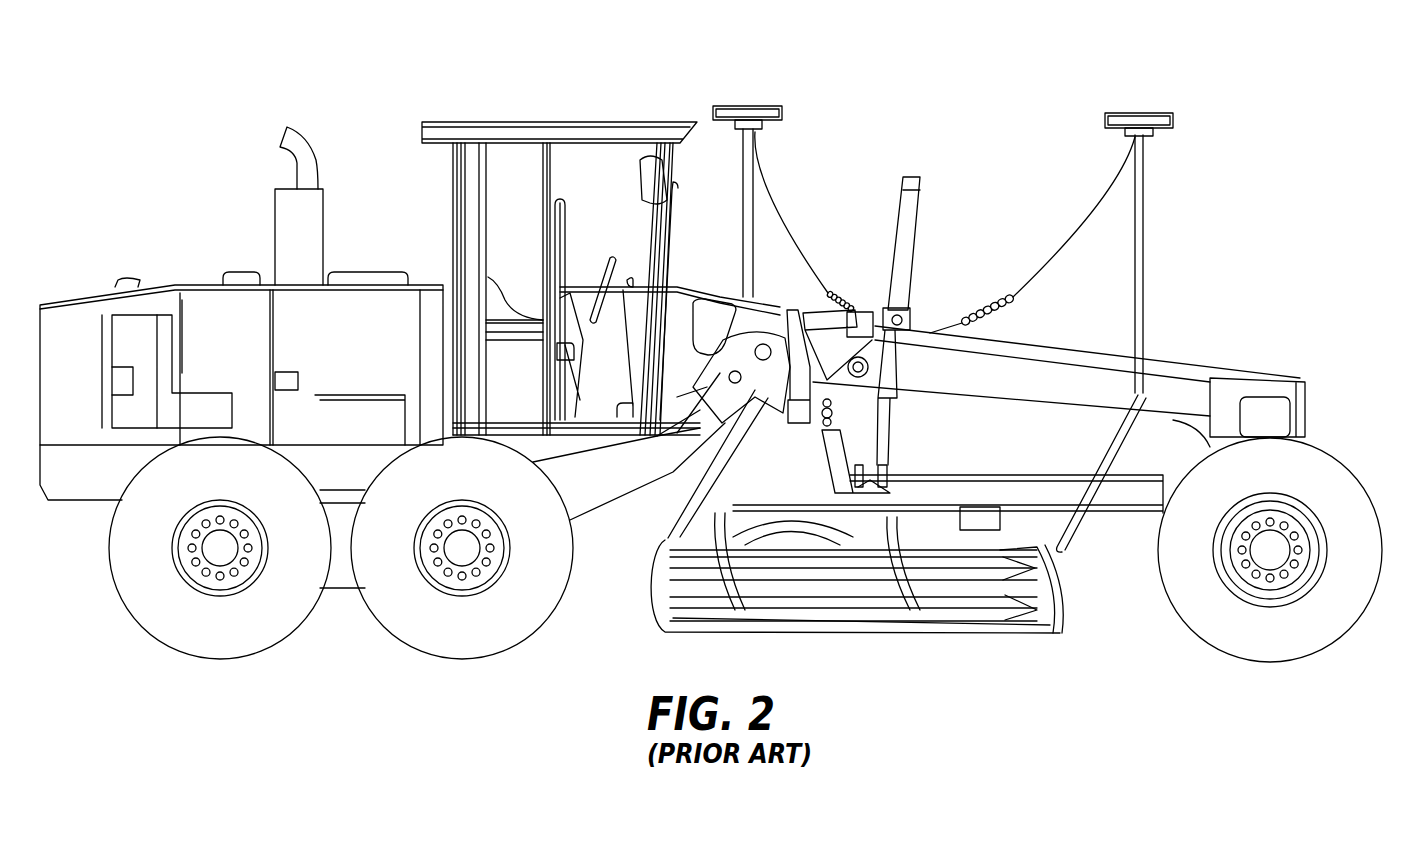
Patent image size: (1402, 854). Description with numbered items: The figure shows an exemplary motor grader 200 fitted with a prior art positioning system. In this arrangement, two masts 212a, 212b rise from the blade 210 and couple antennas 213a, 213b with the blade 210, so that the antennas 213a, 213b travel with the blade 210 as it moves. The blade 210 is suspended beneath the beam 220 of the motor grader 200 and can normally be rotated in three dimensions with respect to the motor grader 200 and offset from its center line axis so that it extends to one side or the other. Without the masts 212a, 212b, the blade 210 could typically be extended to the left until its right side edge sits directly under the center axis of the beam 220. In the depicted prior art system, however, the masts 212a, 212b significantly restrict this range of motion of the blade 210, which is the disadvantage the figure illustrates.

The motor grader 200 is at (711, 392).
The blade 210 is at (1000, 633).
The mast 212a is at (757, 162).
The mast 212b is at (1145, 180).
The antenna 213a is at (780, 112).
The antenna 213b is at (1178, 120).
The beam 220 is at (1185, 390).